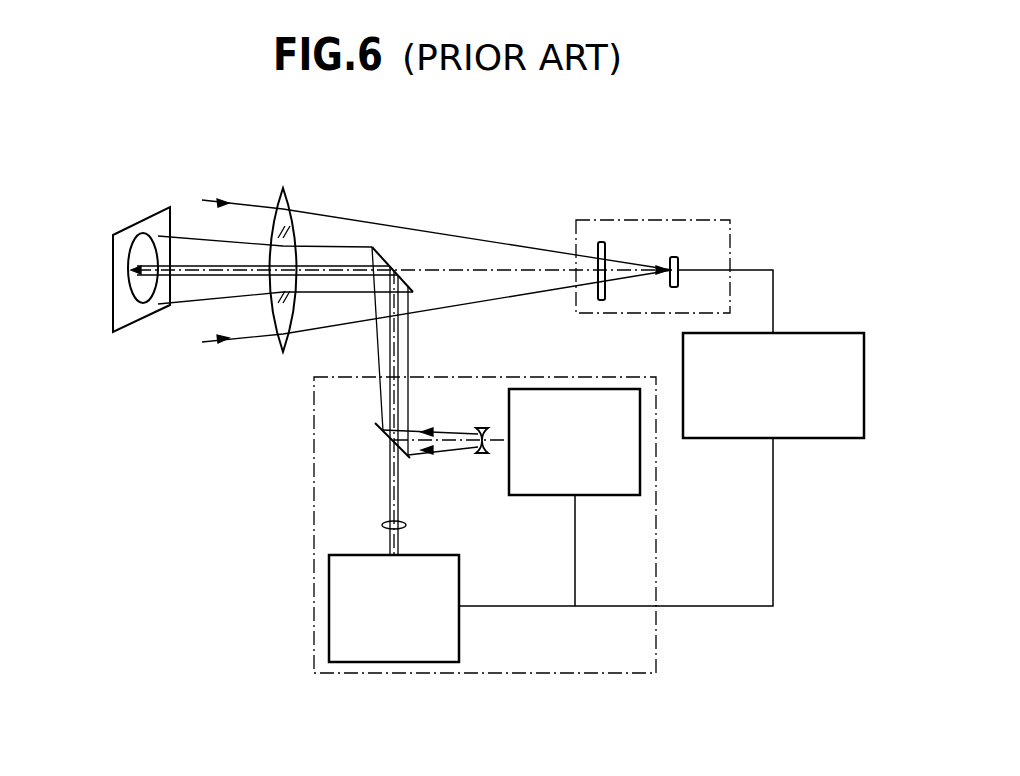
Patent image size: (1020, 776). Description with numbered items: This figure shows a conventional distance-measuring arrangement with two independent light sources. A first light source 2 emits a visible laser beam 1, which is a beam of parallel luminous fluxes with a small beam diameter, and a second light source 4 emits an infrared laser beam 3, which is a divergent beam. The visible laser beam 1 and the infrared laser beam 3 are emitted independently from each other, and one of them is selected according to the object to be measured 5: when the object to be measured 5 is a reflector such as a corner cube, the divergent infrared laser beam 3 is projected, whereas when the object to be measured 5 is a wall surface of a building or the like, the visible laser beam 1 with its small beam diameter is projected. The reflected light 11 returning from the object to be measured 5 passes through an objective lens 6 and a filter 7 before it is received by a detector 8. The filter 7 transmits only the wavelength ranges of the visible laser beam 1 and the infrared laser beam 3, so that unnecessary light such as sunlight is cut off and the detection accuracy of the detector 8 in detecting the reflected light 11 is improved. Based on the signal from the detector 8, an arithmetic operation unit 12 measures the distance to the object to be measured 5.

The visible laser beam 1 is at (388, 490).
The first light source 2 is at (329, 575).
The infrared laser beam 3 is at (452, 432).
The second light source 4 is at (612, 497).
The object to be measured 5 is at (160, 212).
The objective lens 6 is at (292, 197).
The filter 7 is at (605, 245).
The detector 8 is at (678, 258).
The reflected light 11 is at (425, 230).
The arithmetic operation unit 12 is at (806, 440).